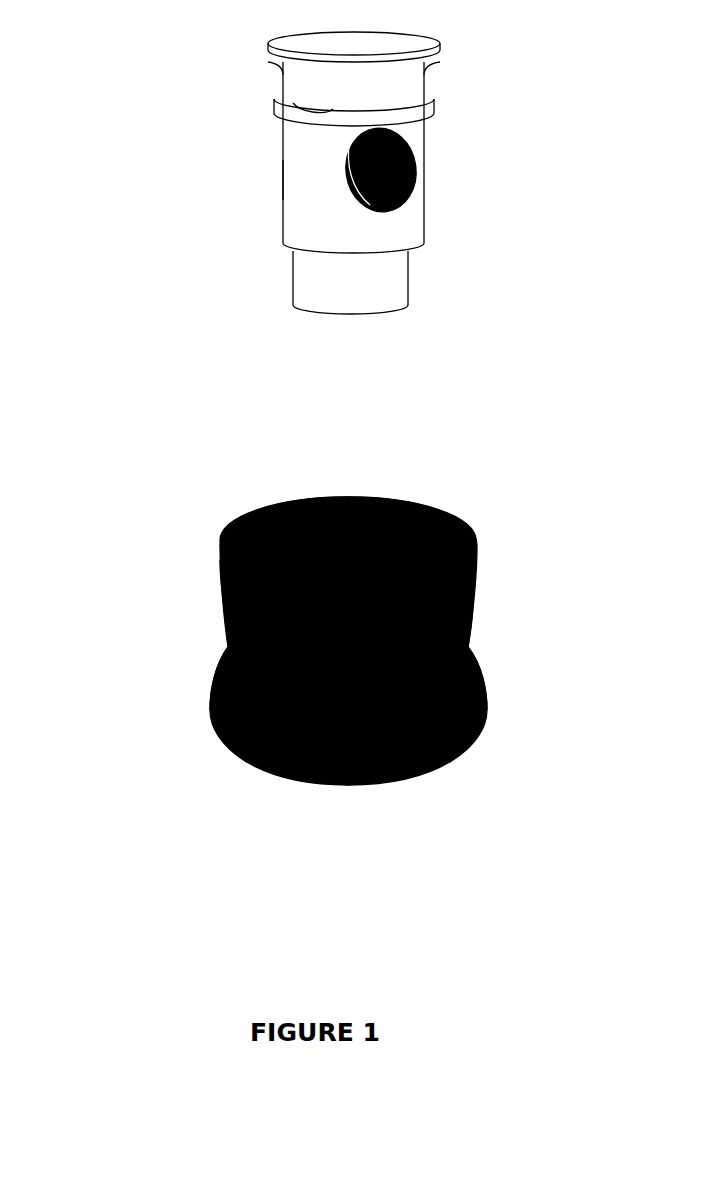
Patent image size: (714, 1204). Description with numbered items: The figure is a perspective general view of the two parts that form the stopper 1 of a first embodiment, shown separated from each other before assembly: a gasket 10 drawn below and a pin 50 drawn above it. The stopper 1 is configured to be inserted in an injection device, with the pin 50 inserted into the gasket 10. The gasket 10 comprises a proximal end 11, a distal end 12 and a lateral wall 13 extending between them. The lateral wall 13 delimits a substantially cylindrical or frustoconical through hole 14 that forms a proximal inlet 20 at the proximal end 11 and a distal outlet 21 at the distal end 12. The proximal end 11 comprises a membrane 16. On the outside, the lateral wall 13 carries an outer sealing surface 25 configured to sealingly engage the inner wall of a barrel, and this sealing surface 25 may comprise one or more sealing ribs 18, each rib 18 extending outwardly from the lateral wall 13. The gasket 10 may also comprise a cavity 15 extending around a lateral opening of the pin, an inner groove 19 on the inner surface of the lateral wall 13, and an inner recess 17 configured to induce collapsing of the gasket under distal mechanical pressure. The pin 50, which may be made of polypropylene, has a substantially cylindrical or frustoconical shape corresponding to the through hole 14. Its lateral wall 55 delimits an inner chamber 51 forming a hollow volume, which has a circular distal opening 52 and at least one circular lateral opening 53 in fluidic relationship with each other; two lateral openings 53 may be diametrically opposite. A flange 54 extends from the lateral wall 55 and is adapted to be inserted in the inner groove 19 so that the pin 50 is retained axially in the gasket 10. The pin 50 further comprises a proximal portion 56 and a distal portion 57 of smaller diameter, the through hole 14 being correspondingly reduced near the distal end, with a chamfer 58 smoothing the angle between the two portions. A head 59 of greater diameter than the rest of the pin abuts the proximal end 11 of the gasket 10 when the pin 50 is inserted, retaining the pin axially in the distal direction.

The stopper 1 is at (118, 203).
The gasket 10 is at (343, 637).
The proximal end 11 is at (343, 495).
The distal end 12 is at (382, 775).
The lateral wall 13 is at (220, 710).
The through hole 14 is at (337, 542).
The cavity 15 is at (460, 593).
The membrane 16 is at (417, 532).
The inner recess 17 is at (448, 680).
The sealing rib 18 is at (217, 603).
The inner groove 19 is at (377, 543).
The proximal inlet 20 is at (305, 538).
The distal outlet 21 is at (320, 789).
The outer sealing surface 25 is at (503, 613).
The pin 50 is at (336, 191).
The inner chamber 51 is at (388, 183).
The distal opening 52 is at (359, 316).
The lateral opening 53 is at (410, 165).
The flange 54 is at (284, 108).
The lateral wall 55 is at (302, 198).
The proximal portion 56 is at (434, 79).
The distal portion 57 is at (420, 272).
The chamfer 58 is at (303, 242).
The head 59 is at (278, 50).